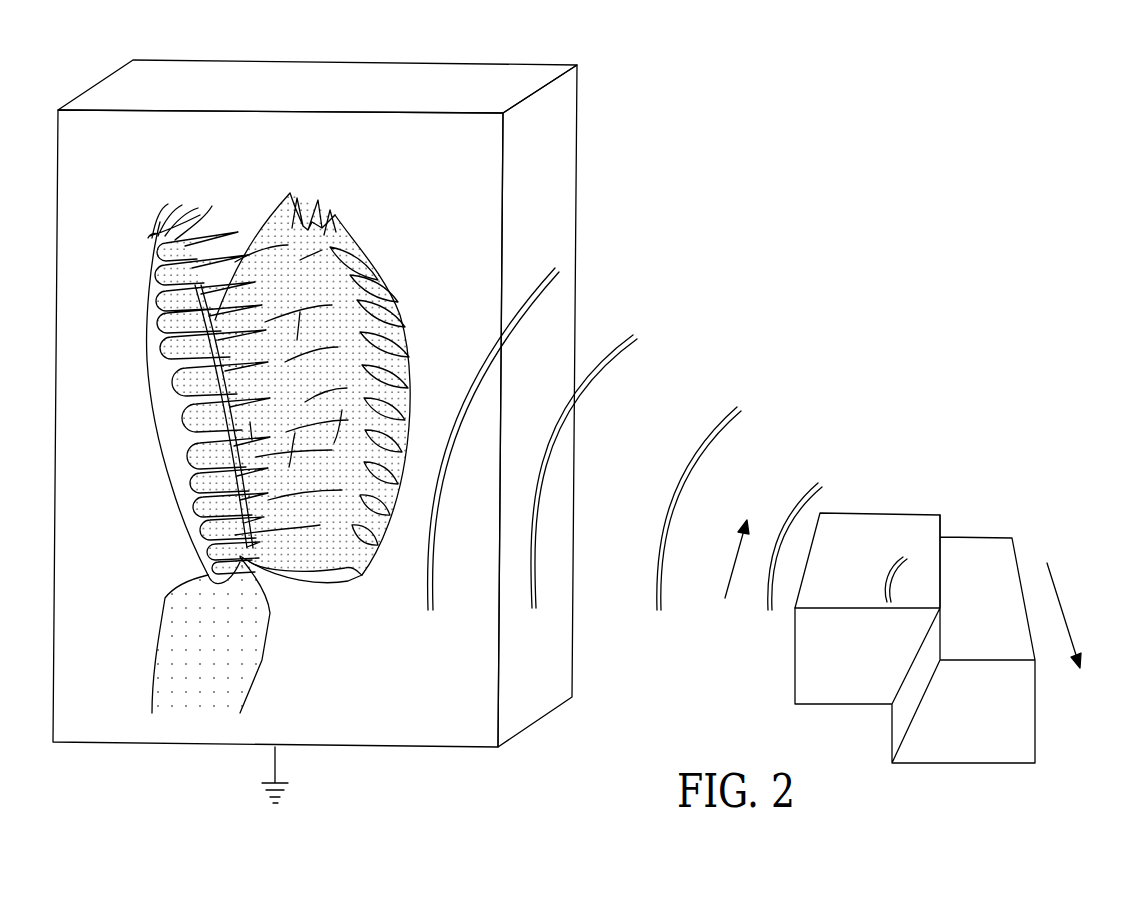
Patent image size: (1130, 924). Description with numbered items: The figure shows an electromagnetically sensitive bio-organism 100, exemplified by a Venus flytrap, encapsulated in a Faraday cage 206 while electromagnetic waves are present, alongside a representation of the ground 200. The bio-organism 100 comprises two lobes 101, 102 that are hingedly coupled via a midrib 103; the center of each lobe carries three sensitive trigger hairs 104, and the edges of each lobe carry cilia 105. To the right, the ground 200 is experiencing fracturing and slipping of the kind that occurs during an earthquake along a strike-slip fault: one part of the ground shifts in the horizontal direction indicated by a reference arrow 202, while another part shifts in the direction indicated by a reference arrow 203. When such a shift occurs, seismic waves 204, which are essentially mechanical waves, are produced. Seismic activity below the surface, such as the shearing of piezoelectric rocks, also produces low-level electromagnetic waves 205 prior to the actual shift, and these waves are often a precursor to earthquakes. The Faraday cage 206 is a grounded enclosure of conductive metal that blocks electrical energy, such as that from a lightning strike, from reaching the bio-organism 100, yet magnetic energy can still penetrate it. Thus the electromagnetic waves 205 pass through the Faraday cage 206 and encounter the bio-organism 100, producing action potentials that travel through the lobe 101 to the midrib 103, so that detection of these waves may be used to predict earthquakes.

The electromagnetically sensitive bio-organism 100 is at (279, 430).
The lobe 101 is at (337, 397).
The lobe 102 is at (227, 434).
The midrib 103 is at (250, 422).
The trigger hairs 104 is at (300, 312).
The cilia 105 is at (210, 210).
The ground 200 is at (968, 533).
The reference arrow 202 is at (1065, 617).
The reference arrow 203 is at (725, 598).
The seismic waves 204 is at (623, 340).
The low-level electromagnetic waves 205 is at (620, 357).
The Faraday cage 206 is at (263, 60).